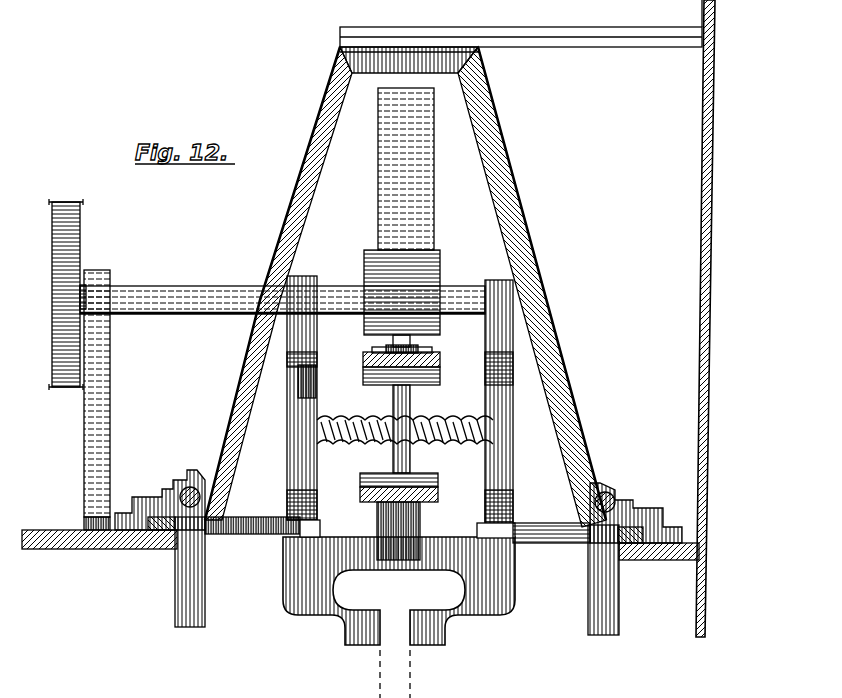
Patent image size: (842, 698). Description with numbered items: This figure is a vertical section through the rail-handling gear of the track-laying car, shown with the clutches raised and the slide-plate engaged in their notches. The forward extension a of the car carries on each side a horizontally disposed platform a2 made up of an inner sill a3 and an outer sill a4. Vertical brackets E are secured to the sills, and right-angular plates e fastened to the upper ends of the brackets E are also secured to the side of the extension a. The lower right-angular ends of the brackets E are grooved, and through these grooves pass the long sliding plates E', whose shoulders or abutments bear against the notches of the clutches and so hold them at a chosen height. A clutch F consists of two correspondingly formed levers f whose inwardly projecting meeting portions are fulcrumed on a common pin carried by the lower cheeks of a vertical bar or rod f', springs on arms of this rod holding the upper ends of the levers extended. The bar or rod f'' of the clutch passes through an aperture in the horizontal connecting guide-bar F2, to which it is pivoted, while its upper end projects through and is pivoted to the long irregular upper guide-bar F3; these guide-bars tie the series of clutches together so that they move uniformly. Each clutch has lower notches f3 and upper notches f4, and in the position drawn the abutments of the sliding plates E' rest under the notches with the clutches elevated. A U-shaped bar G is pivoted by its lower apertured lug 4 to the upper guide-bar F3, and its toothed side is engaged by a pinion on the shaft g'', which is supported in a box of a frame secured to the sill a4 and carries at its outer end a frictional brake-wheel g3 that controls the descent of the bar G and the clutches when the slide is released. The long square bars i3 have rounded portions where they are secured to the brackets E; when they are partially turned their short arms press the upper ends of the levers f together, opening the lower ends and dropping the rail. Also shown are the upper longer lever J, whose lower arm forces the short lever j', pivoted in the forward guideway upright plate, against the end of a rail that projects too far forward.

The forward extension a is at (718, 318).
The platform a2 is at (606, 357).
The inner sill a3 is at (669, 562).
The outer sill a4 is at (116, 549).
The right-angular plate e is at (521, 23).
The bracket E is at (405, 287).
The sliding plate E' is at (397, 534).
The clutch F is at (384, 406).
The connecting guide-bar F2 is at (439, 493).
The second guide-bar F3 is at (441, 357).
The lever f is at (395, 404).
The bar or rod f' is at (391, 429).
The bar or rod of the clutch f'' is at (399, 617).
The lower notch f3 is at (287, 505).
The upper notch f4 is at (288, 352).
The apertured lug 4 is at (386, 347).
The U-shaped bar G is at (402, 217).
The shaft g'' is at (282, 286).
The brake-wheel g3 is at (76, 262).
The square-shaped bar i3 is at (190, 487).
The upper longer lever J is at (620, 589).
The short lever j' is at (200, 572).